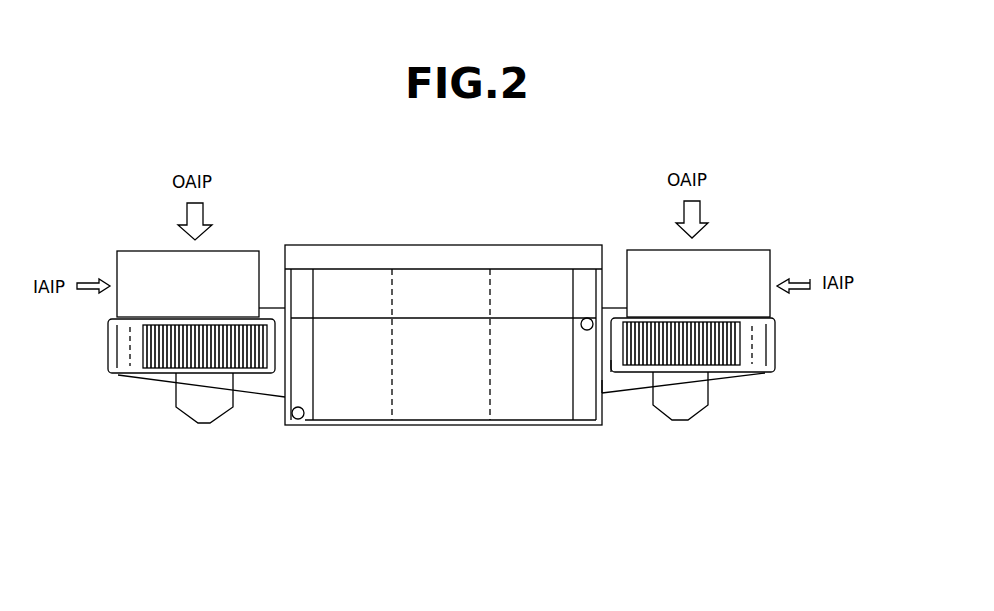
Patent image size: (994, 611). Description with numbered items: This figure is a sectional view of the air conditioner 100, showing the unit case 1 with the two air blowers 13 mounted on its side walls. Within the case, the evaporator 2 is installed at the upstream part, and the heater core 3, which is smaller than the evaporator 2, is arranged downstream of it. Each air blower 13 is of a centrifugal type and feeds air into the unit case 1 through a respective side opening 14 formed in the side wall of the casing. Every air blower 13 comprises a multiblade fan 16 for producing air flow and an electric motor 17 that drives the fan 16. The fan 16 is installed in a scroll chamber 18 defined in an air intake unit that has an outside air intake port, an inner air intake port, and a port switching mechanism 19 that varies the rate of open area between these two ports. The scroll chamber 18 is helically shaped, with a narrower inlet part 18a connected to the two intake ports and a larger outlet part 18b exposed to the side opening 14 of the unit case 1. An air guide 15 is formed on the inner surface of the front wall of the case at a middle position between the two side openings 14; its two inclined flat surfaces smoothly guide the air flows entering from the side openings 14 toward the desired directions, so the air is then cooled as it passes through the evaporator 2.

The air conditioner 100 is at (757, 127).
The unit case 1 is at (522, 188).
The evaporator 2 is at (365, 280).
The heater core 3 is at (357, 407).
The air blower 13 is at (143, 398).
The side opening 14 is at (272, 383).
The air guide 15 is at (490, 390).
The multiblade fan 16 is at (723, 342).
The electric motor 17 is at (197, 428).
The scroll chamber 18 is at (763, 332).
The narrower inlet part 18a is at (620, 366).
The larger outlet part 18b is at (606, 383).
The port switching mechanism 19 is at (227, 251).